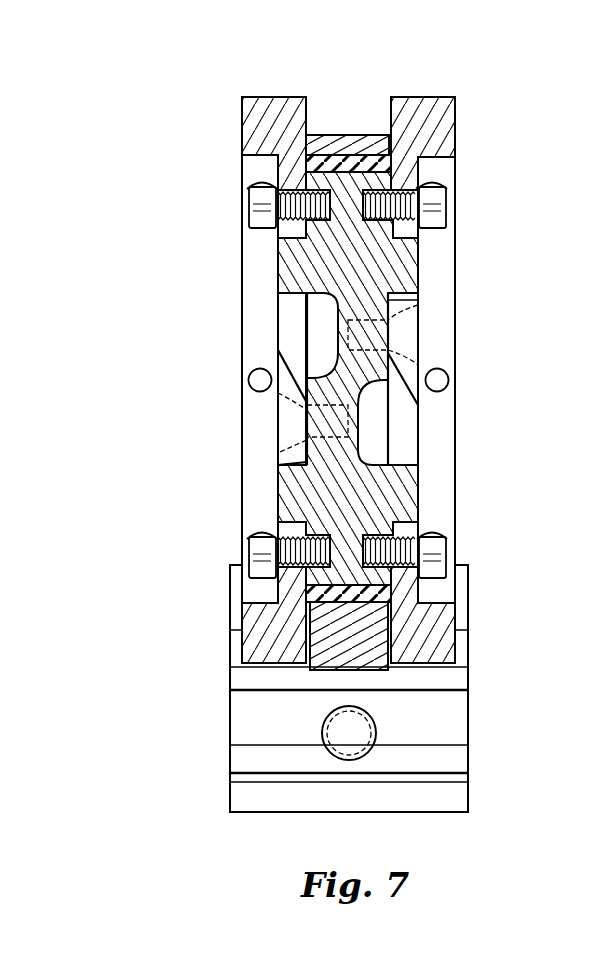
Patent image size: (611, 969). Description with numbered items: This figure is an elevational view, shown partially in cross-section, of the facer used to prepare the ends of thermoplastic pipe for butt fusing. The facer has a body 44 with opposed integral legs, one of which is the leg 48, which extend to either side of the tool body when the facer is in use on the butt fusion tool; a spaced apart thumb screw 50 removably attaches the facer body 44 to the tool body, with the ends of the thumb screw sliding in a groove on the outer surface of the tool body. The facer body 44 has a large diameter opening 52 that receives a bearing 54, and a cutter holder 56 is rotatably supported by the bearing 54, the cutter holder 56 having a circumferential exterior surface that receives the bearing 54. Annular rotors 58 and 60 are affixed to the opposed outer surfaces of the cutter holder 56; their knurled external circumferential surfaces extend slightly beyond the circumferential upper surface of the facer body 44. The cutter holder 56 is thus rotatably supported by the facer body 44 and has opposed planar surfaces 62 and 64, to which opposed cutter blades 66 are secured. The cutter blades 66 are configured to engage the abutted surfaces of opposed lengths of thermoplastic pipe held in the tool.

The facer body 44 is at (327, 142).
The leg 48 is at (437, 802).
The thumb screw 50 is at (352, 728).
The large diameter opening 52 is at (387, 172).
The bearing 54 is at (340, 163).
The cutter holder 56 is at (365, 493).
The annular rotor 58 is at (272, 95).
The annular rotor 60 is at (430, 97).
The planar surface 62 is at (273, 278).
The planar surface 64 is at (418, 263).
The cutter blade 66 is at (278, 350).